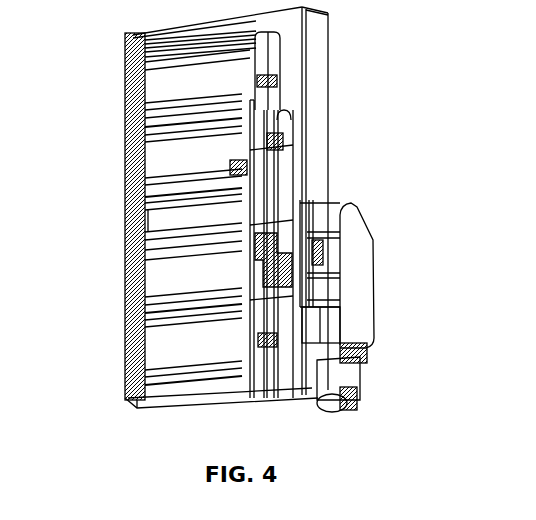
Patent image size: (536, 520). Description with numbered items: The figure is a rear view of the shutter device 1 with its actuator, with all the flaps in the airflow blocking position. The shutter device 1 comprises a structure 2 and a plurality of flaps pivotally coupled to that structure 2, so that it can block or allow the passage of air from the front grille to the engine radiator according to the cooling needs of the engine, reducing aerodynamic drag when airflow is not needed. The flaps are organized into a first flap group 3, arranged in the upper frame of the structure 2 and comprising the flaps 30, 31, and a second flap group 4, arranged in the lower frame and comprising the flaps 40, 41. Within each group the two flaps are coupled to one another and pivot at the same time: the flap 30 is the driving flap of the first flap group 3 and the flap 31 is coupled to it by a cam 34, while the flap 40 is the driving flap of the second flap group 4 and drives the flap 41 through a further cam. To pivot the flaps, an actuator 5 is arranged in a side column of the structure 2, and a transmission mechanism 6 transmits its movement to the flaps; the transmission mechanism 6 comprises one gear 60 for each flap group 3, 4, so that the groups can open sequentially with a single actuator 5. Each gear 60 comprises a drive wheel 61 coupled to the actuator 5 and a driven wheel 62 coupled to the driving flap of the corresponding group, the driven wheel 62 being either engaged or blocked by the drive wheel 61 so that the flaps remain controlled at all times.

The shutter device 1 is at (370, 70).
The structure 2 is at (140, 45).
The first flap group 3 is at (120, 126).
The flap 30 is at (132, 188).
The flap 31 is at (160, 92).
The cam 34 is at (123, 163).
The second flap group 4 is at (120, 320).
The flap 40 is at (167, 287).
The flap 41 is at (150, 357).
The actuator 5 is at (355, 287).
The transmission mechanism 6 is at (289, 300).
The gear 60 is at (310, 162).
The drive wheel 61 is at (333, 187).
The driven wheel 62 is at (317, 147).